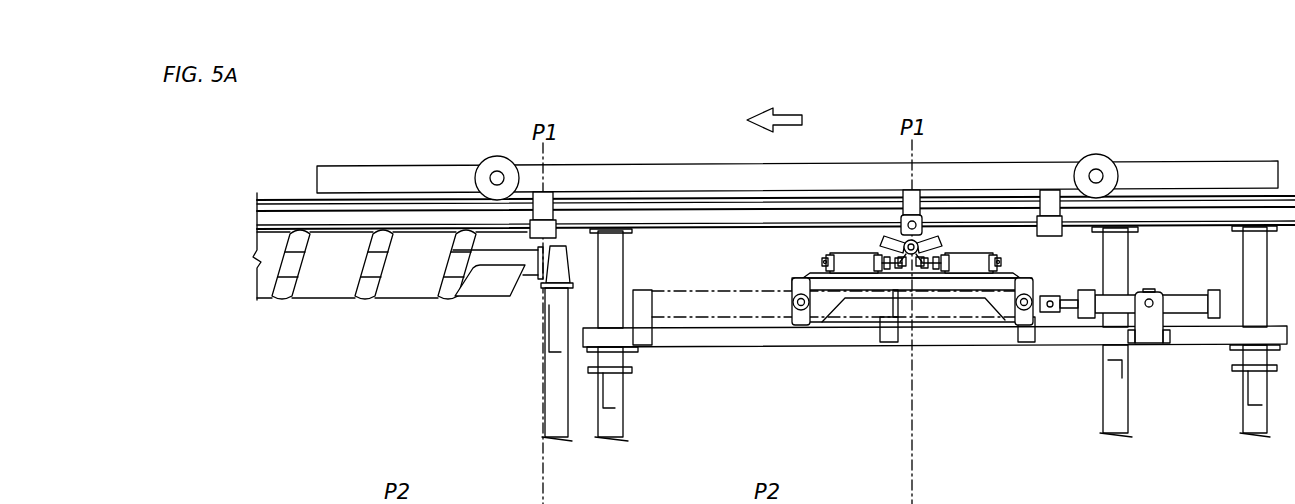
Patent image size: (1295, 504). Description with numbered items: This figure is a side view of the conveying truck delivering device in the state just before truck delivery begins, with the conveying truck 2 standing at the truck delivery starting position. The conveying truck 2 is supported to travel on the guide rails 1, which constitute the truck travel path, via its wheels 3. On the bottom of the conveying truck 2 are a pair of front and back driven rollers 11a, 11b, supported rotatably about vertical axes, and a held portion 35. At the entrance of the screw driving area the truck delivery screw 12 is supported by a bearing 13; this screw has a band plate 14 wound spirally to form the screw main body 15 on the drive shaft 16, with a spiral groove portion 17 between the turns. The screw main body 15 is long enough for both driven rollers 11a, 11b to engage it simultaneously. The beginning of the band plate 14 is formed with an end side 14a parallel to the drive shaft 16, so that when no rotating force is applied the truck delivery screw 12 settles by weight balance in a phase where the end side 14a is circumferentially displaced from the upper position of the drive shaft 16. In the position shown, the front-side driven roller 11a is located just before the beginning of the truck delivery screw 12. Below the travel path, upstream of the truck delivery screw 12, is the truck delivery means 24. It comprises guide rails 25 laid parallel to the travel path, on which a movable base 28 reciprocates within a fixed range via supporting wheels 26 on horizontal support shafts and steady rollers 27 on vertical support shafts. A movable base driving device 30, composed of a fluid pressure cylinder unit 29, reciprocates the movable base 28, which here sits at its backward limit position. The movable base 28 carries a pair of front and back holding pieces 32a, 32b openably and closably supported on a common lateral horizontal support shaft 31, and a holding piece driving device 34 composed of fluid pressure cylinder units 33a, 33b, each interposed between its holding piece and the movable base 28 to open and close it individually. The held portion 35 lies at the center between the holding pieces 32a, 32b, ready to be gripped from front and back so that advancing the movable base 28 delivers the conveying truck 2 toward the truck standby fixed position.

The guide rails 1 is at (689, 178).
The conveying truck 2 is at (1199, 158).
The wheels 3 is at (492, 163).
The front-side driven roller 11a is at (545, 230).
The back-side driven roller 11b is at (1045, 226).
The truck delivery screw 12 is at (318, 306).
The bearing 13 is at (558, 265).
The band plate 14 is at (485, 298).
The end side 14a is at (498, 262).
The screw main body 15 is at (358, 226).
The drive shaft 16 is at (441, 300).
The spiral groove portion 17 is at (352, 300).
The truck delivery means 24 is at (888, 310).
The guide rails 25 is at (697, 310).
The supporting wheels 26 is at (843, 302).
The steady rollers 27 is at (792, 291).
The movable base 28 is at (880, 279).
The fluid pressure cylinder unit 29 is at (1184, 315).
The movable base driving device 30 is at (1185, 292).
The lateral horizontal support shaft 31 is at (905, 243).
The front holding piece 32a is at (928, 263).
The back holding piece 32b is at (882, 245).
The fluid pressure cylinder unit 33a is at (838, 256).
The fluid pressure cylinder unit 33b is at (985, 258).
The holding piece driving device 34 is at (975, 247).
The held portion 35 is at (924, 219).